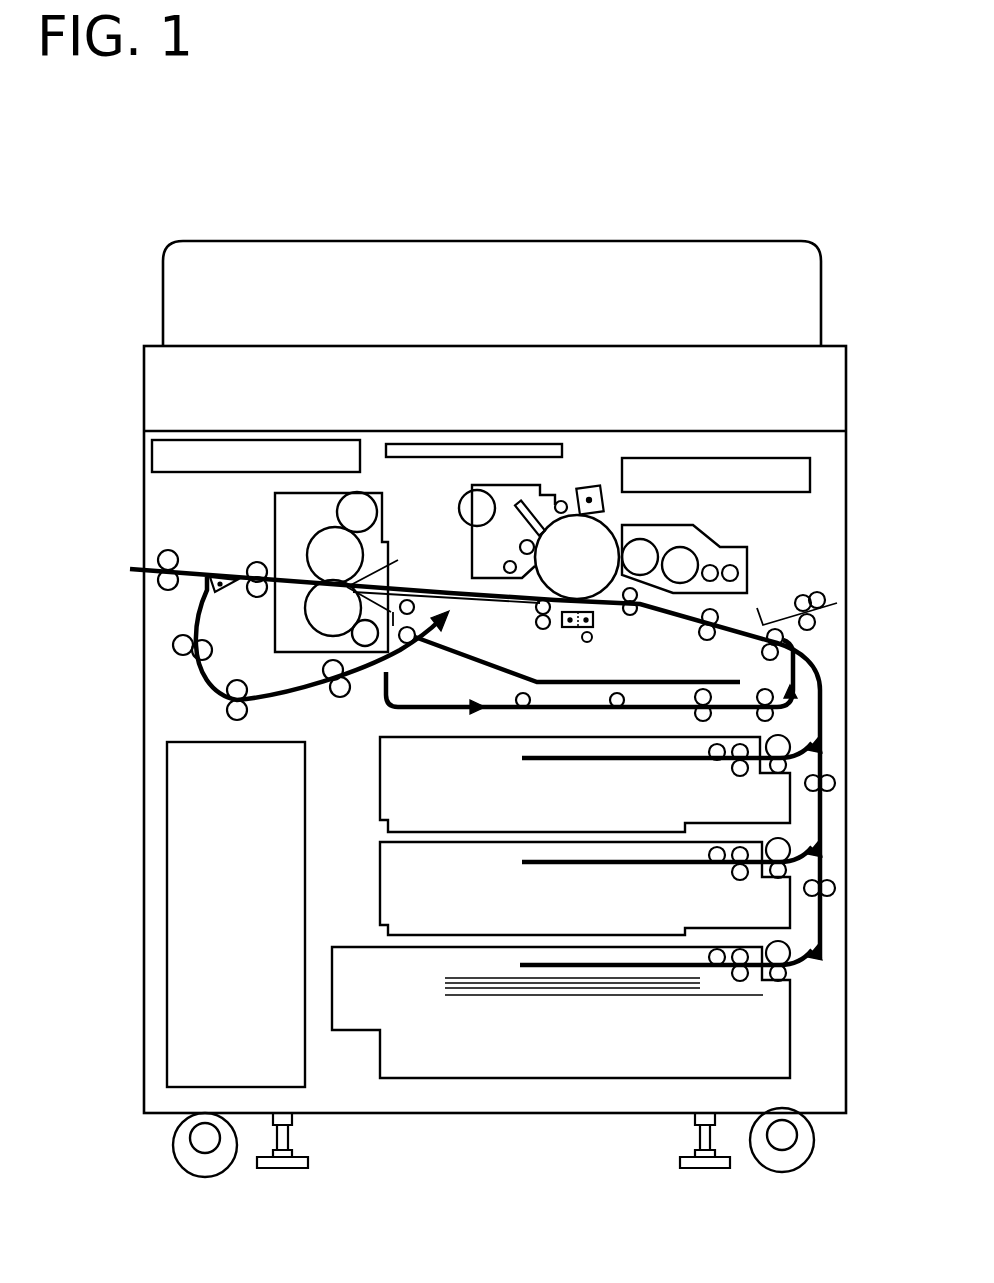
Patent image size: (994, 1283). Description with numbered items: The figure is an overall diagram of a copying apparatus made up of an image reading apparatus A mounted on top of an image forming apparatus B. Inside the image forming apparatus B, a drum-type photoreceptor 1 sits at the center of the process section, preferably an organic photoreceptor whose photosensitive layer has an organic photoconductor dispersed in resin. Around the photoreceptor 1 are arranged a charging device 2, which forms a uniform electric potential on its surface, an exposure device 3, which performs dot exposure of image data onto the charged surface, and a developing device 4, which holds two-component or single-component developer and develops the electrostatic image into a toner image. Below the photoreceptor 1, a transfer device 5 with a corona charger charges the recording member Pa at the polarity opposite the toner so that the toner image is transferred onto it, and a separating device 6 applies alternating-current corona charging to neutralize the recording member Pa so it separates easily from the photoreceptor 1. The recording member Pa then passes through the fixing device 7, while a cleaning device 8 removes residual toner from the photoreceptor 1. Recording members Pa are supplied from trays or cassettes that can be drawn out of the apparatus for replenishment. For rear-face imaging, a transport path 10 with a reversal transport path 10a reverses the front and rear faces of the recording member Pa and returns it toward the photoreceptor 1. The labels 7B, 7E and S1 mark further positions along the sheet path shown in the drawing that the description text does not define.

The image reading apparatus A is at (790, 282).
The image forming apparatus B is at (860, 402).
The photoreceptor 1 is at (614, 524).
The charging device 2 is at (581, 486).
The exposure device 3 is at (728, 458).
The developing device 4 is at (717, 538).
The transfer device 5 is at (598, 628).
The separating device 6 is at (567, 628).
The fixing device 7 is at (386, 524).
The sheet conveyance path 7B is at (463, 610).
The sheet conveyance path 7E is at (557, 718).
The cleaning device 8 is at (472, 562).
The transport path 10 is at (320, 685).
The reversal transport path 10a is at (660, 675).
The sheet sensor S1 is at (627, 760).
The recording member Pa is at (540, 995).